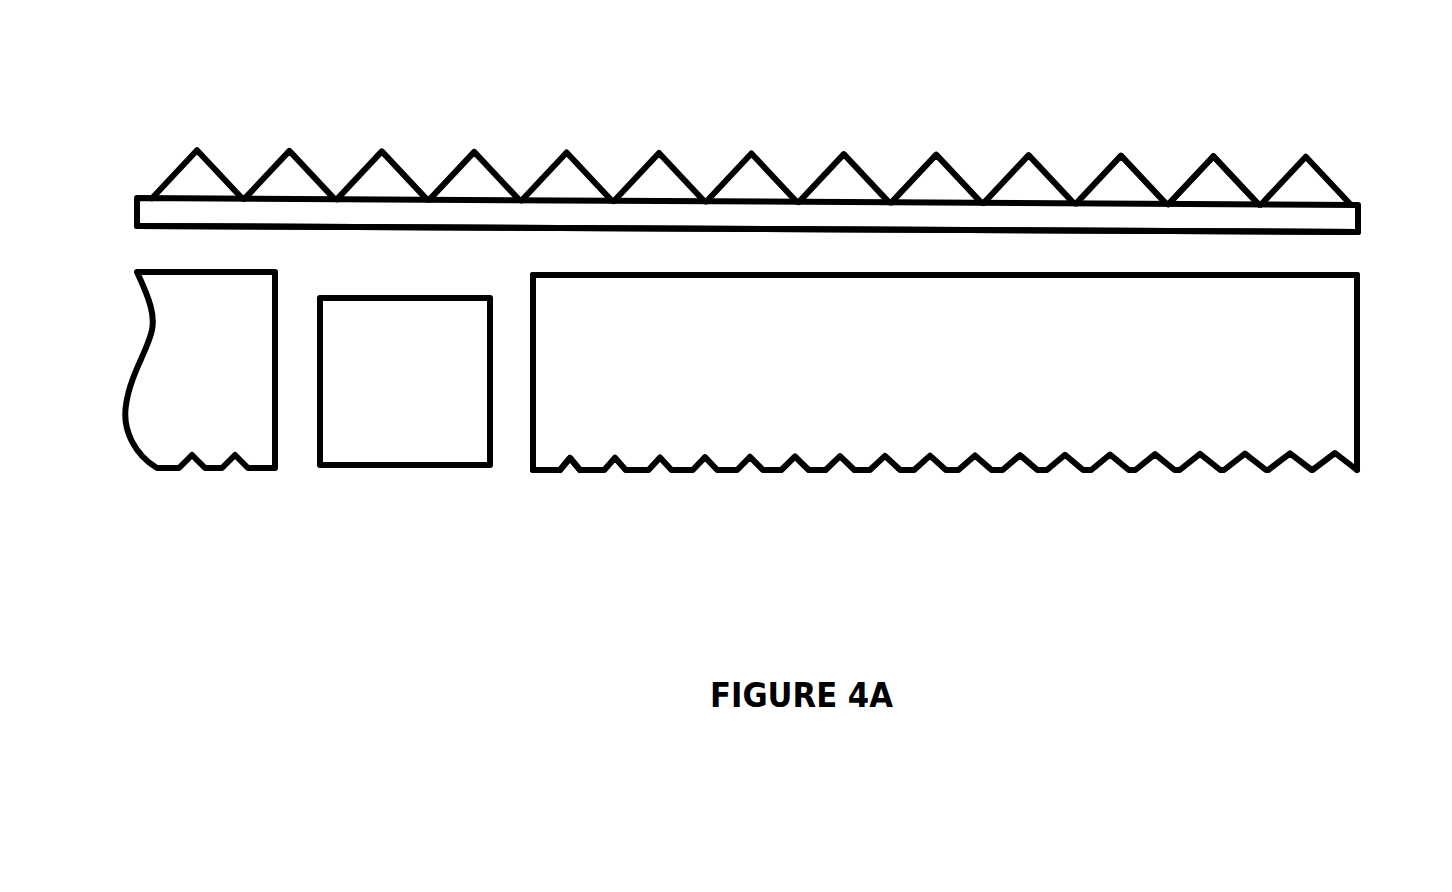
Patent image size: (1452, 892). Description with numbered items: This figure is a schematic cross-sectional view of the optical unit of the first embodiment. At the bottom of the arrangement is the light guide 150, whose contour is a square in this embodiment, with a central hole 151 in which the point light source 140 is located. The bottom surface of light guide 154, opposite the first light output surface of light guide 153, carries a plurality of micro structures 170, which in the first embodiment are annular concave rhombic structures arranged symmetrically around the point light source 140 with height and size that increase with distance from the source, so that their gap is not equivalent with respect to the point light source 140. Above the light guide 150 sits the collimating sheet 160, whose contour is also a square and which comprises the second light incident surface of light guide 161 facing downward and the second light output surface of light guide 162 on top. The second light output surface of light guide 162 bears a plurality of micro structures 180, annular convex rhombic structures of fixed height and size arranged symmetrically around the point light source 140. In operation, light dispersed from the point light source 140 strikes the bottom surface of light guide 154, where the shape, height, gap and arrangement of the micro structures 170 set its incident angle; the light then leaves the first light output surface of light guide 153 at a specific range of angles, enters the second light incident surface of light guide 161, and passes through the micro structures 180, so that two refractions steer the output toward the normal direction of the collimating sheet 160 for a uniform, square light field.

The point light source 140 is at (405, 443).
The light guide 150 is at (945, 443).
The central hole 151 is at (295, 432).
The first light output surface of light guide 153 is at (848, 277).
The bottom surface of light guide 154 is at (580, 472).
The collimating sheet 160 is at (845, 113).
The second light incident surface of light guide 161 is at (1323, 235).
The second light output surface of light guide 162 is at (1167, 201).
The micro structures 170 is at (1060, 453).
The micro structures 180 is at (1303, 154).